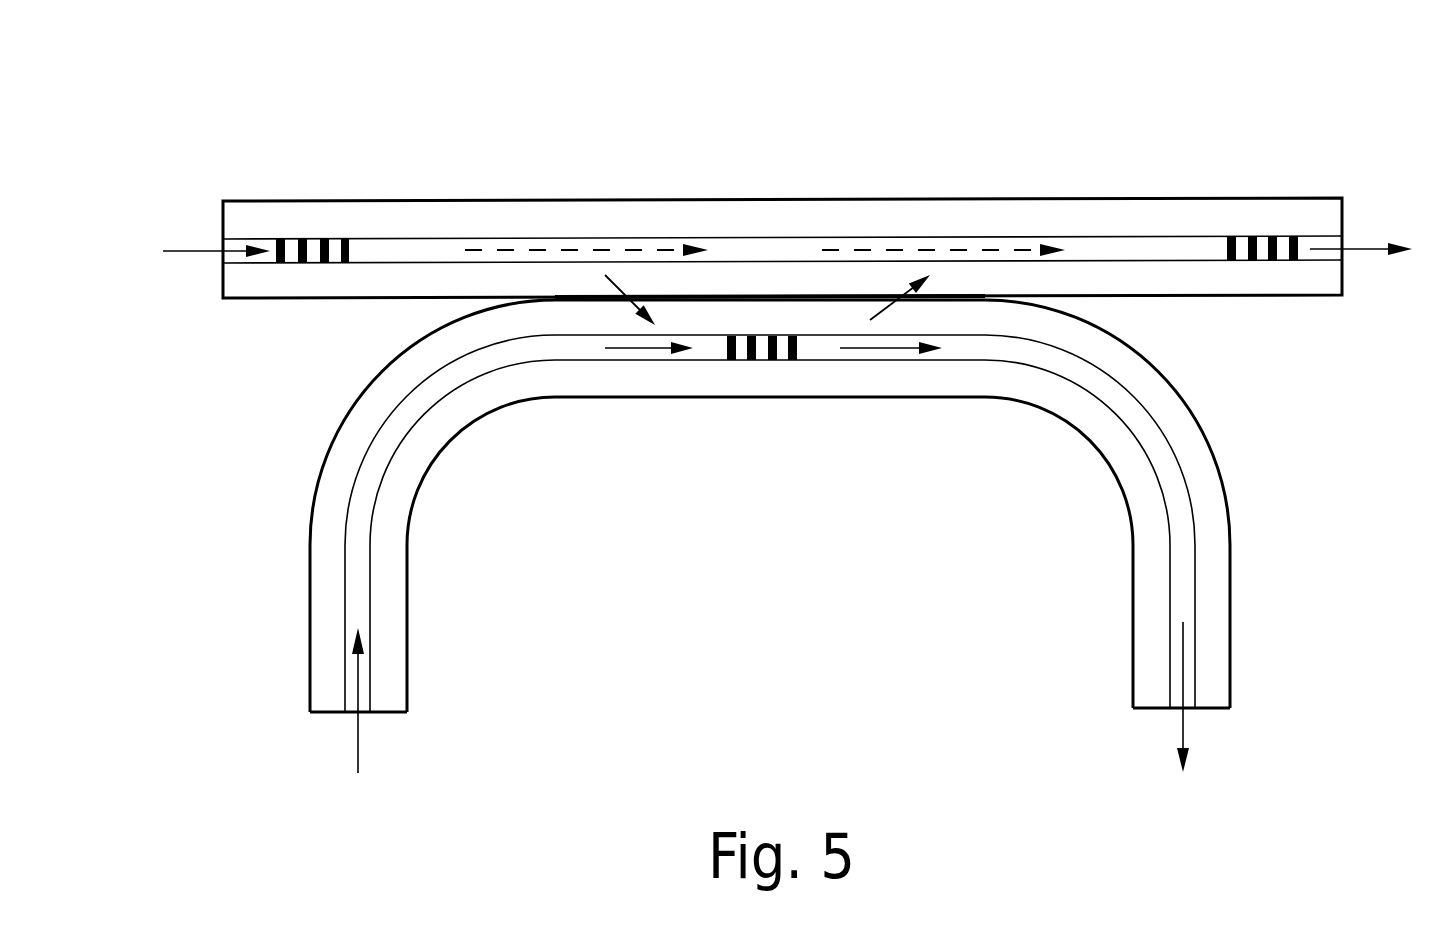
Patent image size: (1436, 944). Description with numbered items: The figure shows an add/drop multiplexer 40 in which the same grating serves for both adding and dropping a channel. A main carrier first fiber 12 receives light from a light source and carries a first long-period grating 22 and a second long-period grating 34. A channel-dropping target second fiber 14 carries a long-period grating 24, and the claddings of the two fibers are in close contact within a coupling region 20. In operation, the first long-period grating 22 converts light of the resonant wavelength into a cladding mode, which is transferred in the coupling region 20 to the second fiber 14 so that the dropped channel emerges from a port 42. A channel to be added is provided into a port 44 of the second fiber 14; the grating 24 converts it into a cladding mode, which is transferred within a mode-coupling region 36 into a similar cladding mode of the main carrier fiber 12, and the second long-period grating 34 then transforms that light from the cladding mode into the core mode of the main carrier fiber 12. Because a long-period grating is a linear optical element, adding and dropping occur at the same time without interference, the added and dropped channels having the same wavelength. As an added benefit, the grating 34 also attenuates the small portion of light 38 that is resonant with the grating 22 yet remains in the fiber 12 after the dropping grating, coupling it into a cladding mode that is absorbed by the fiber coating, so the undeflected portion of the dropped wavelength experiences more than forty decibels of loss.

The add/drop multiplexer 40 is at (229, 60).
The main carrier first fiber 12 is at (713, 199).
The coupling region 20 is at (943, 299).
The first long-period grating 22 is at (312, 243).
The second long-period grating 34 is at (1240, 243).
The small portion of light 38 is at (890, 250).
The mode-coupling region 36 is at (590, 299).
The channel-dropping target second fiber 14 is at (1065, 435).
The long-period grating 24 is at (762, 362).
The port 44 is at (367, 715).
The port 42 is at (1173, 710).